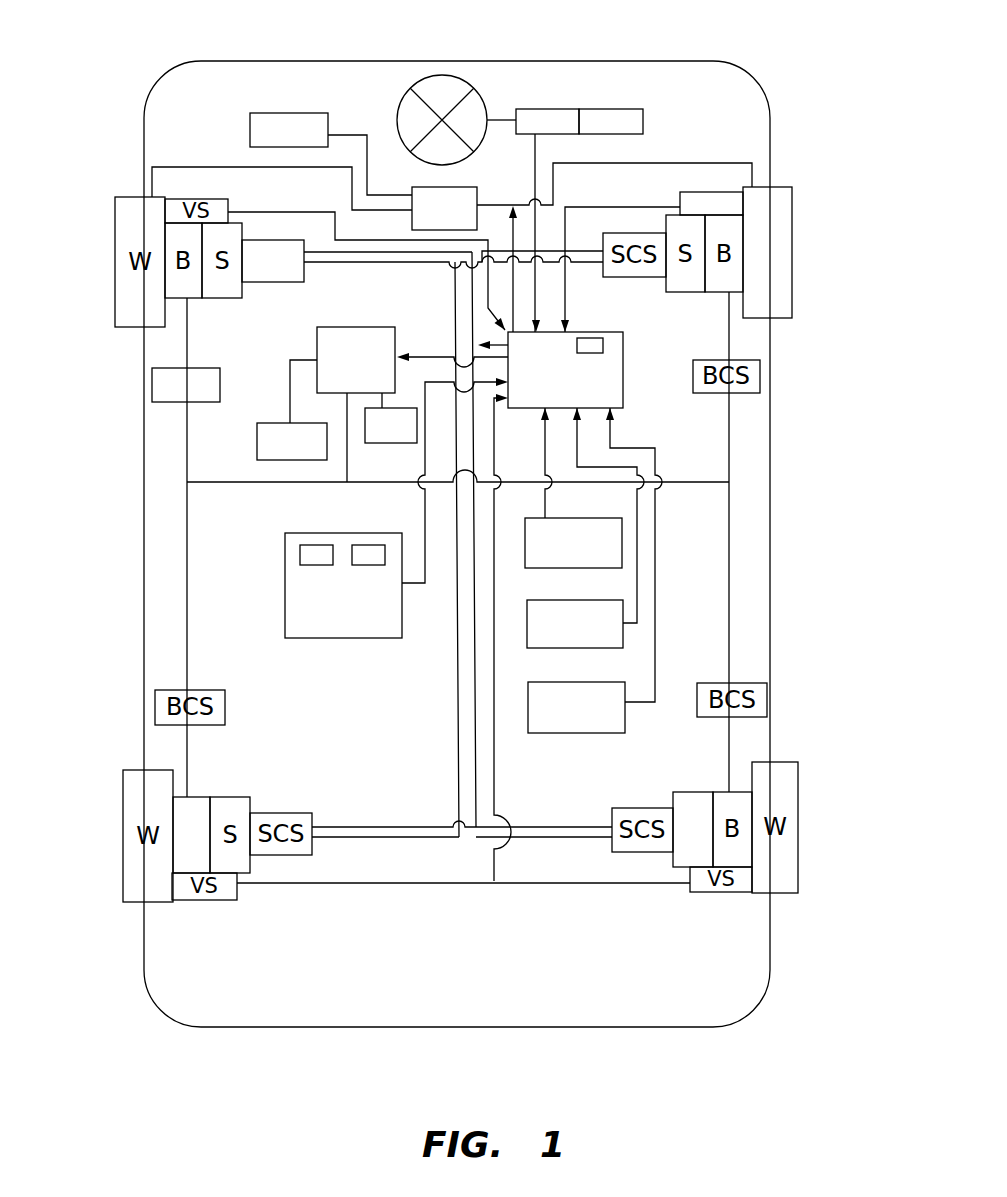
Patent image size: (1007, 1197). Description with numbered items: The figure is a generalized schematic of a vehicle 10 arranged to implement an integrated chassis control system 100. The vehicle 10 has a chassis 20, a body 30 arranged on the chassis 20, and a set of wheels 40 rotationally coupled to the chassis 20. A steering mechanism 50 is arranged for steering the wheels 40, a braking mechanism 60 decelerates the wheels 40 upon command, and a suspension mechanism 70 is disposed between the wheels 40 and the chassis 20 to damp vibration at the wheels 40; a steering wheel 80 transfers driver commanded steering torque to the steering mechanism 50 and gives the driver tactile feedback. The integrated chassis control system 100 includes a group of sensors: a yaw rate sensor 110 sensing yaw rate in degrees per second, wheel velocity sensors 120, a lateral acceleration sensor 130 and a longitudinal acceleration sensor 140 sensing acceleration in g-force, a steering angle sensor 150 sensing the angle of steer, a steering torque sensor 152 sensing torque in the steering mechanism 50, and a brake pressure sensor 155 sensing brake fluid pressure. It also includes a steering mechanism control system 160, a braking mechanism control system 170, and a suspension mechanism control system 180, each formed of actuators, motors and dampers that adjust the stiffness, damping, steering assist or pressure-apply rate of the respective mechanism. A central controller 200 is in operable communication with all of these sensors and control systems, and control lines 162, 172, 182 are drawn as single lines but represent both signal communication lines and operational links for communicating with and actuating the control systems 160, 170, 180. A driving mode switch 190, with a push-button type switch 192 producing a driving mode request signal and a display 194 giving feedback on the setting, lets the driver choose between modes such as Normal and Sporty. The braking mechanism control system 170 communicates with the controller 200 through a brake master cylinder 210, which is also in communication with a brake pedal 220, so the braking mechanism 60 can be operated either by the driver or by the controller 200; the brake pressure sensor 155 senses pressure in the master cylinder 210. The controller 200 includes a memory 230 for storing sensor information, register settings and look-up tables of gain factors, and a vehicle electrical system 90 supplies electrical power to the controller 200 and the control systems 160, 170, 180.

The vehicle 10 is at (209, 1077).
The chassis 20 is at (458, 698).
The body 30 is at (146, 979).
The wheels 40 is at (792, 207).
The steering mechanism 50 is at (400, 100).
The braking mechanism 60 is at (200, 797).
The suspension mechanism 70 is at (672, 860).
The steering wheel 80 is at (443, 100).
The vehicle electrical system 90 is at (282, 113).
The integrated chassis control system 100 is at (618, 374).
The yaw rate sensor 110 is at (587, 518).
The wheel velocity sensors 120 is at (702, 192).
The lateral acceleration sensor 130 is at (603, 648).
The longitudinal acceleration sensor 140 is at (602, 733).
The steering angle sensor 150 is at (540, 109).
The steering torque sensor 152 is at (620, 109).
The brake pressure sensor 155 is at (392, 443).
The steering mechanism control system 160 is at (417, 187).
The control line 162 is at (188, 167).
The braking mechanism control system 170 is at (172, 403).
The control line 172 is at (183, 350).
The suspension mechanism control system 180 is at (282, 282).
The control line 182 is at (383, 265).
The driving mode switch 190 is at (356, 518).
The push-button type switch 192 is at (298, 555).
The display 194 is at (362, 543).
The central controller 200 is at (623, 383).
The brake master cylinder 210 is at (348, 325).
The brake pedal 220 is at (273, 423).
The memory 230 is at (603, 345).